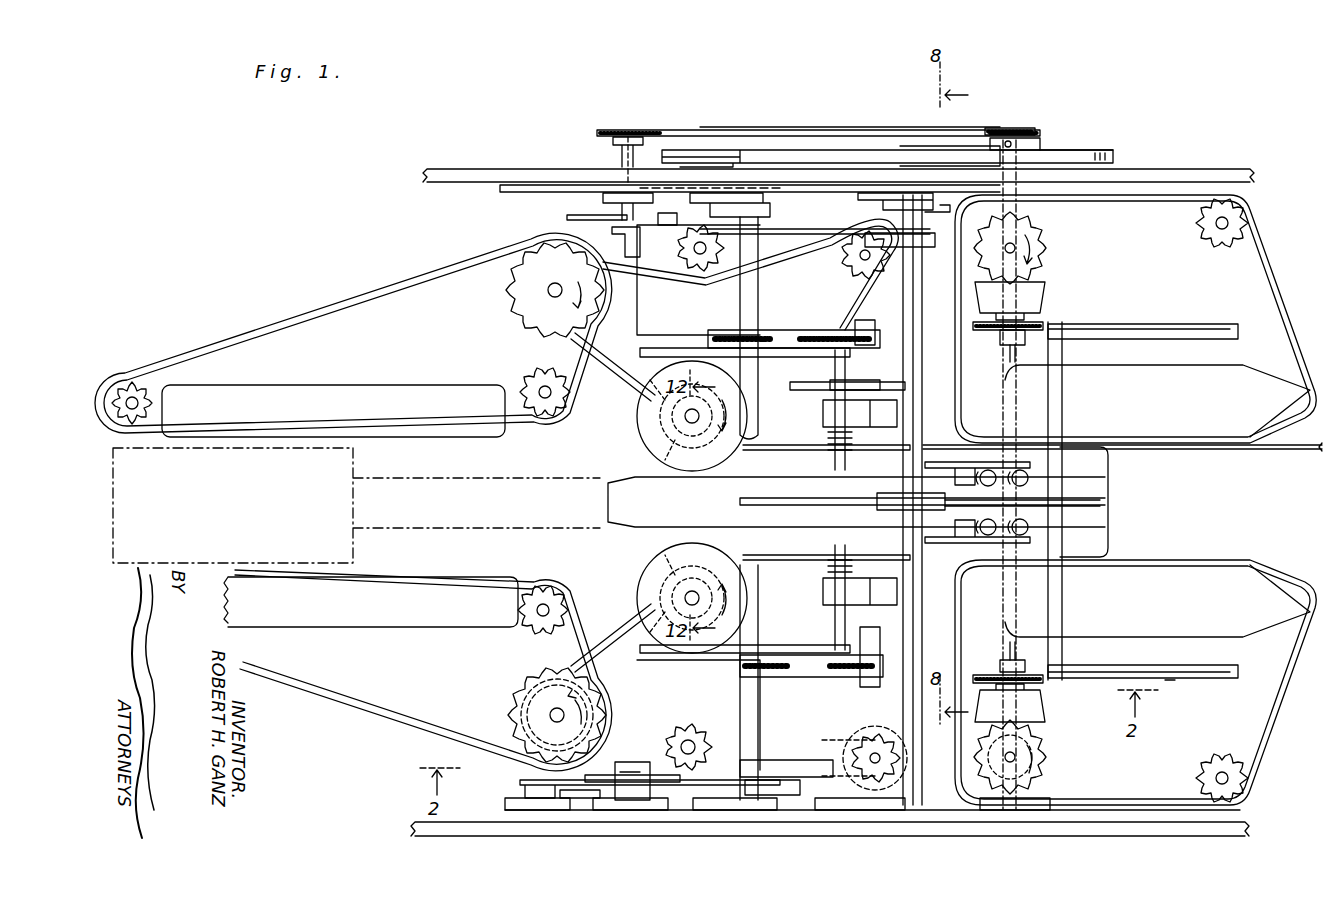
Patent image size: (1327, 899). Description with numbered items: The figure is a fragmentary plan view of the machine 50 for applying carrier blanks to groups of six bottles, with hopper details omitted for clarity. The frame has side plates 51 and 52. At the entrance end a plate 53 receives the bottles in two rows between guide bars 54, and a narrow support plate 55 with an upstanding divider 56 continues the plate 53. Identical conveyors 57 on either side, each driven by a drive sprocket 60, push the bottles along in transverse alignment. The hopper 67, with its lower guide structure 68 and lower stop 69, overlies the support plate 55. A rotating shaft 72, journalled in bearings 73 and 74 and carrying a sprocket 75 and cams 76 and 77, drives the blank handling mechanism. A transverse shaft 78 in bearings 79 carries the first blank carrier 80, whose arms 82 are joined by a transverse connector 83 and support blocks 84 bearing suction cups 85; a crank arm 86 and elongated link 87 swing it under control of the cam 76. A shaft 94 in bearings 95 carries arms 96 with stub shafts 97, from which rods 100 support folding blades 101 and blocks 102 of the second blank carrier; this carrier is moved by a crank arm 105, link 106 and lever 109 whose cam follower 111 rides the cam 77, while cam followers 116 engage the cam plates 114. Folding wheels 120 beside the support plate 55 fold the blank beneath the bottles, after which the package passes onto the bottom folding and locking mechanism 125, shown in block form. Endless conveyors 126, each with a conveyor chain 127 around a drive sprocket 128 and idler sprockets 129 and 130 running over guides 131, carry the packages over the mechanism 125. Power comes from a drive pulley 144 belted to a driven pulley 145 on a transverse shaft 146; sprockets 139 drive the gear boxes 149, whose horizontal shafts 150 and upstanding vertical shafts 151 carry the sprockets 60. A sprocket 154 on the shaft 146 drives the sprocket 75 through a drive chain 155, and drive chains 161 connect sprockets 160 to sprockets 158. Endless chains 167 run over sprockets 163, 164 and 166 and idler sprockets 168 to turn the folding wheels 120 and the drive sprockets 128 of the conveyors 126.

The machine 50 is at (535, 162).
The side plate 51 is at (466, 170).
The side plate 52 is at (422, 822).
The plate 53 is at (1290, 425).
The guide bars 54 is at (780, 450).
The support plate 55 is at (636, 520).
The upstanding divider 56 is at (788, 504).
The conveyors 57 is at (1262, 252).
The drive sprocket 60 is at (1044, 257).
The hopper 67 is at (1164, 681).
The lower guide structure 68 is at (1240, 324).
The lower stop 69 is at (1060, 610).
The rotating shaft 72 is at (622, 243).
The bearing 73 is at (598, 200).
The bearing 74 is at (596, 795).
The sprocket 75 is at (602, 132).
The cam 76 is at (565, 217).
The cam 77 is at (572, 735).
The transverse shaft 78 is at (918, 336).
The bearings 79 is at (945, 205).
The first blank carrier 80 is at (948, 434).
The arms 82 is at (971, 460).
The transverse connector 83 is at (895, 513).
The block 84 is at (1005, 484).
The suction cups 85 is at (1018, 470).
The crank arm 86 is at (951, 248).
The elongated link 87 is at (766, 240).
The shaft 94 is at (754, 410).
The bearings 95 is at (770, 217).
The rearwardly extending arms 96 is at (767, 335).
The stub shaft 97 is at (858, 327).
The rods 100 is at (831, 438).
The folding blade 101 is at (816, 450).
The block 102 is at (822, 410).
The crank arm 105 is at (755, 760).
The link 106 is at (792, 786).
The lever 109 is at (520, 782).
The cam follower 111 is at (647, 759).
The cam plates 114 is at (656, 345).
The cam followers 116 is at (826, 348).
The folding wheels 120 is at (640, 422).
The bottom folding and locking mechanism 125 is at (369, 466).
The endless conveyors 126 is at (417, 430).
The conveyor chain 127 is at (300, 316).
The drive sprocket 128 is at (517, 312).
The idler sprocket 129 is at (130, 384).
The idler sprocket 130 is at (530, 375).
The guides 131 is at (338, 355).
The sprocket 139 is at (1044, 320).
The drive pulley 144 is at (697, 149).
The driven pulley 145 is at (1104, 150).
The transverse shaft 146 is at (1010, 360).
The gear boxes 149 is at (1040, 228).
The horizontal shaft 150 is at (1005, 343).
The upstanding vertical shaft 151 is at (1003, 248).
The sprocket 154 is at (1016, 129).
The drive chain 155 is at (826, 128).
The sprocket 158 is at (840, 755).
The sprocket 160 is at (1046, 772).
The drive chain 161 is at (940, 770).
The sprocket 163 is at (844, 746).
The sprocket 164 is at (675, 501).
The sprocket 166 is at (631, 647).
The endless chain 167 is at (616, 635).
The idler sprocket 168 is at (690, 734).